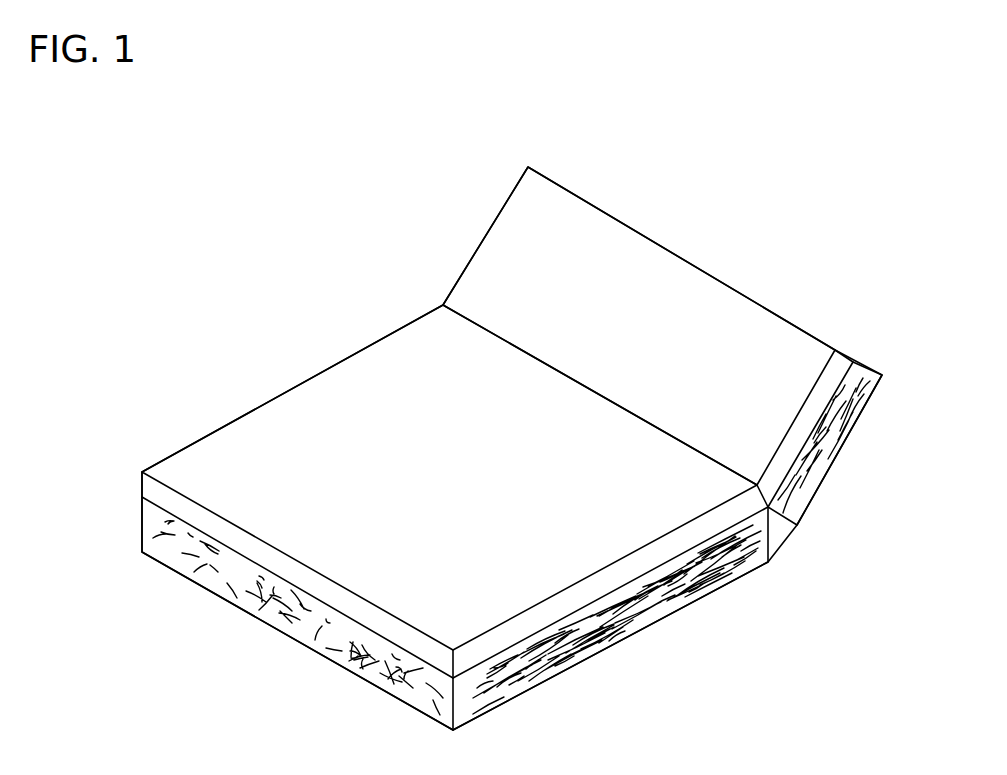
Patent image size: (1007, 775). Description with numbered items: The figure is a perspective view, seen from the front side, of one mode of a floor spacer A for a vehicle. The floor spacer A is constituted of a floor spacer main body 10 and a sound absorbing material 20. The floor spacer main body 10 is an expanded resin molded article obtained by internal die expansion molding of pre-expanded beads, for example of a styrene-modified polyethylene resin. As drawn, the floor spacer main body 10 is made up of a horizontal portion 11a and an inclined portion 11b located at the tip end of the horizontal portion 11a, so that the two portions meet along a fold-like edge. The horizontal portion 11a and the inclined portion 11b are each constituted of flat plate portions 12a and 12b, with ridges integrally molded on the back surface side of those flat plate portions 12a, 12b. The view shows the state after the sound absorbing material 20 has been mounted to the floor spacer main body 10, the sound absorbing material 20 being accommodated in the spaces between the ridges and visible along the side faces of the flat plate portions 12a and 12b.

The floor spacer for a vehicle A is at (340, 238).
The floor spacer main body 10 is at (355, 353).
The horizontal portion 11a is at (233, 420).
The inclined portion 11b is at (497, 223).
The flat plate portion 12a is at (545, 612).
The flat plate portion 12b is at (710, 307).
The sound absorbing material 20 is at (823, 460).